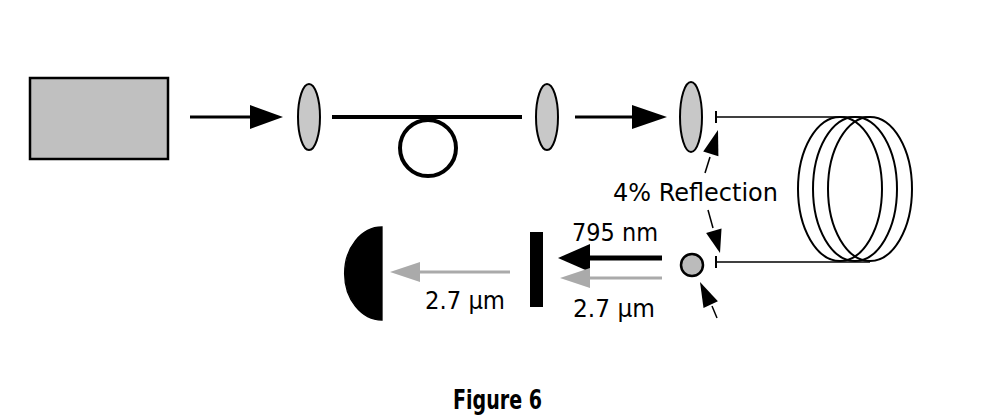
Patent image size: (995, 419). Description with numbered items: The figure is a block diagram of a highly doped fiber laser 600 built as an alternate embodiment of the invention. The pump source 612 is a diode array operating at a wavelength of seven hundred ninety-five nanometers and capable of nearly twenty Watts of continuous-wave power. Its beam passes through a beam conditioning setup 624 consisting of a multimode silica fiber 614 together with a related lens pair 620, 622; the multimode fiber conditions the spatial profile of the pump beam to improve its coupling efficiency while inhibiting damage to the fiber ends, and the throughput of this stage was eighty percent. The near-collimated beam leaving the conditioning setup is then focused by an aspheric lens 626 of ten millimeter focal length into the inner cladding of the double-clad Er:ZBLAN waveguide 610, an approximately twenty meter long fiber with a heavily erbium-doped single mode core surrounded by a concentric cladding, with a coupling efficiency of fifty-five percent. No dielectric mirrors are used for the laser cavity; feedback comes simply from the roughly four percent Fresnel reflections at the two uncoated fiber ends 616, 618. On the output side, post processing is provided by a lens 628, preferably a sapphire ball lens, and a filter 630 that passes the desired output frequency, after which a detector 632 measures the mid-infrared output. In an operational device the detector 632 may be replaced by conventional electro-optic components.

The fiber laser 600 is at (153, 267).
The double-clad Er:ZBLAN waveguide 610 is at (873, 112).
The pump source 612 is at (104, 75).
The multimode silica fiber 614 is at (357, 125).
The uncoated fiber end 616 is at (722, 112).
The uncoated fiber end 618 is at (720, 263).
The lens 620 is at (302, 145).
The lens 622 is at (542, 147).
The beam conditioning setup 624 is at (593, 34).
The aspheric lens 626 is at (682, 95).
The lens 628 is at (687, 278).
The filter 630 is at (530, 307).
The detector 632 is at (343, 278).